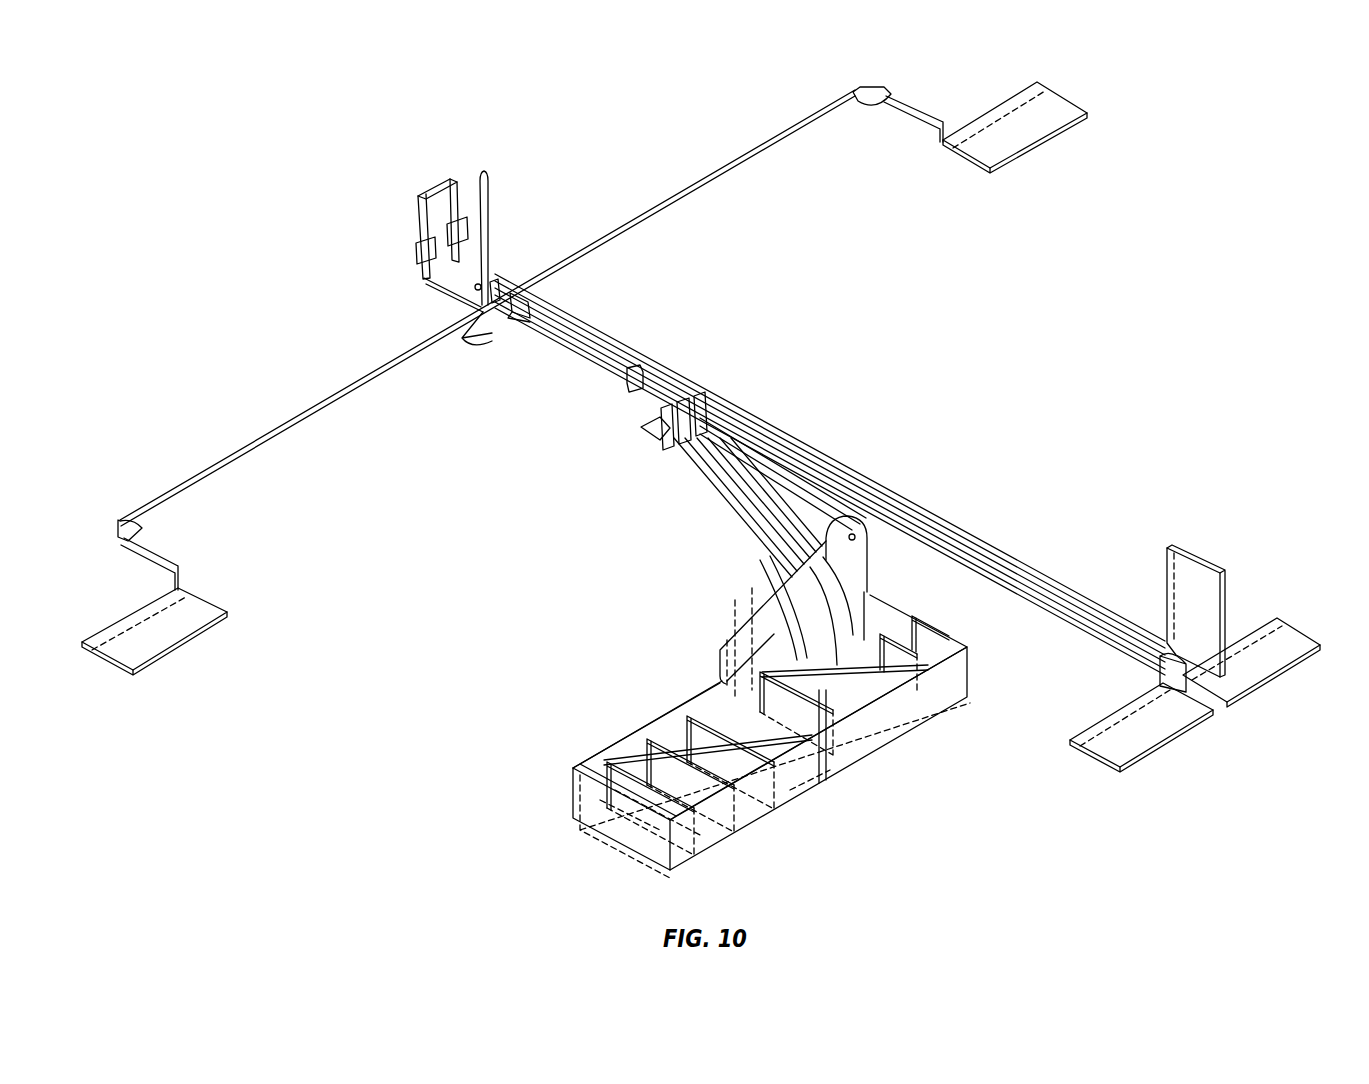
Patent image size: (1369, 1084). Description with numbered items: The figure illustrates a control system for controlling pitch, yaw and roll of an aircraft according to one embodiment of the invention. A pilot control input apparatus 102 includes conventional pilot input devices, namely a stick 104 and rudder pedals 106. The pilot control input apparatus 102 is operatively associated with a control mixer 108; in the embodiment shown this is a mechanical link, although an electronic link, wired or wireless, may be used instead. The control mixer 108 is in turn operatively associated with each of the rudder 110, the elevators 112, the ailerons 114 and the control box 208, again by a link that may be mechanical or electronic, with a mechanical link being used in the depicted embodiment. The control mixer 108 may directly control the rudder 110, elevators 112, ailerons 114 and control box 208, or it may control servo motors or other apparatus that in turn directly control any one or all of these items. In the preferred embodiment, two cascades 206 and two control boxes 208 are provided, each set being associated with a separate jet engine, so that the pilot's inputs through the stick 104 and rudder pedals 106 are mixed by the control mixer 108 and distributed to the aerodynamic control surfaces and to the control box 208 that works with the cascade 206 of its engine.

The pilot control input apparatus 102 is at (427, 182).
The stick 104 is at (490, 182).
The rudder pedals 106 is at (416, 256).
The control mixer 108 is at (648, 436).
The rudder 110 is at (1205, 598).
The elevators 112 is at (1253, 664).
The ailerons 114 is at (145, 644).
The cascade 206 is at (772, 652).
The control box 208 is at (625, 829).